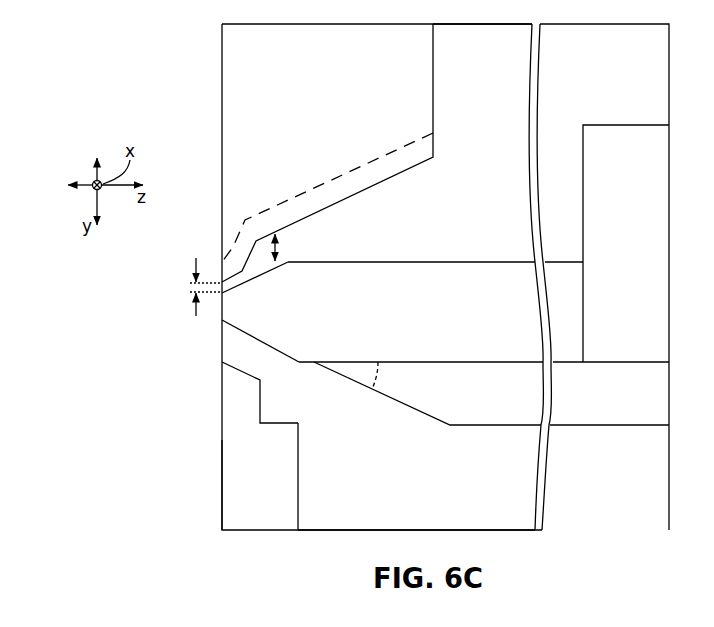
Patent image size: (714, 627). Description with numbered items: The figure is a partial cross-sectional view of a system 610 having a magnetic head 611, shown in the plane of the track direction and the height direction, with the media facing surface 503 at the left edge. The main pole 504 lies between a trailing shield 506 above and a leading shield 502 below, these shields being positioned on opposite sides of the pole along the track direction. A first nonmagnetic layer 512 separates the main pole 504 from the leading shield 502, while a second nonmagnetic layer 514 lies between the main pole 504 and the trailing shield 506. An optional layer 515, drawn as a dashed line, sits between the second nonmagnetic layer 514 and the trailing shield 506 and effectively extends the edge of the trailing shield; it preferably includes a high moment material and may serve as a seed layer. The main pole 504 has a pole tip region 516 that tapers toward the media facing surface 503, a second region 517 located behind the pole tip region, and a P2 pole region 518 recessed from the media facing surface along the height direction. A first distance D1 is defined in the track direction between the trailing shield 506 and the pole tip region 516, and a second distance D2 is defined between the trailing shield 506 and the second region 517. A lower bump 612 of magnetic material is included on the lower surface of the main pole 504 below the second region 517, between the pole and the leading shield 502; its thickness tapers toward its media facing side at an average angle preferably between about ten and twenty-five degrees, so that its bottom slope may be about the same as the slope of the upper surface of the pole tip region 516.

The system 610 is at (62, 78).
The magnetic head 611 is at (93, 297).
The optional layer 515 is at (284, 204).
The pole tip region 516 is at (233, 328).
The main pole 504 is at (298, 382).
The media facing surface 503 is at (215, 497).
The leading shield 502 is at (277, 464).
The trailing shield 506 is at (347, 112).
The second nonmagnetic layer 514 is at (502, 87).
The second region 517 is at (453, 321).
The P2 pole region 518 is at (645, 257).
The lower bump 612 is at (480, 404).
The first nonmagnetic layer 512 is at (453, 487).
The first distance D1 is at (192, 287).
The second distance D2 is at (275, 250).